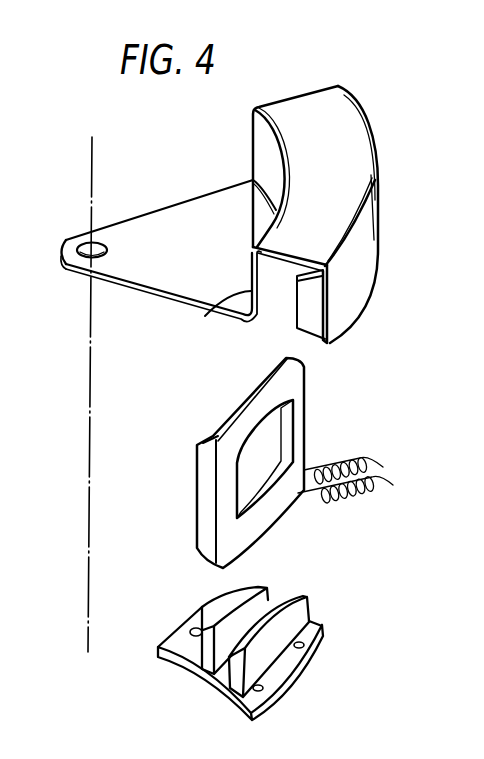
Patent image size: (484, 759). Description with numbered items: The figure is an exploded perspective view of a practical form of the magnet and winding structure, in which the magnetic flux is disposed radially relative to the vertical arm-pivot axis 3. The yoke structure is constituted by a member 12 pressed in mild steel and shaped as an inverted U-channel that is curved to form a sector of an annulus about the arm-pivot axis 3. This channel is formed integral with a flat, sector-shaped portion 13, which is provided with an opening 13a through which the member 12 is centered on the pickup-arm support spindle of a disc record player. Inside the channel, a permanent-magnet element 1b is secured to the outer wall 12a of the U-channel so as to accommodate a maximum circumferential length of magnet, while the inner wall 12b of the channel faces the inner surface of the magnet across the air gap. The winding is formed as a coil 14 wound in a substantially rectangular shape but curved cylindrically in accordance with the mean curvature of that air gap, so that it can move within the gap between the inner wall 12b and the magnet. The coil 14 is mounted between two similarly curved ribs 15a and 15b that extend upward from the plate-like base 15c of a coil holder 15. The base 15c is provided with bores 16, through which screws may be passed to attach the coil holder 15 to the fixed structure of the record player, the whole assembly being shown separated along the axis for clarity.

The arm-pivot axis 3 is at (93, 146).
The yoke member 12 is at (303, 106).
The outer wall of U-channel 12a is at (330, 343).
The inner wall of channel 12b is at (206, 315).
The permanent-magnet element 1b is at (311, 318).
The flat sector-shaped portion 13 is at (163, 212).
The hole in arm 13a is at (86, 243).
The coil 14 is at (270, 512).
The coil holder 15 is at (325, 652).
The curved rib 15a is at (246, 596).
The curved rib 15b is at (292, 597).
The plate-like base 15c is at (285, 673).
The bores 16 is at (189, 631).